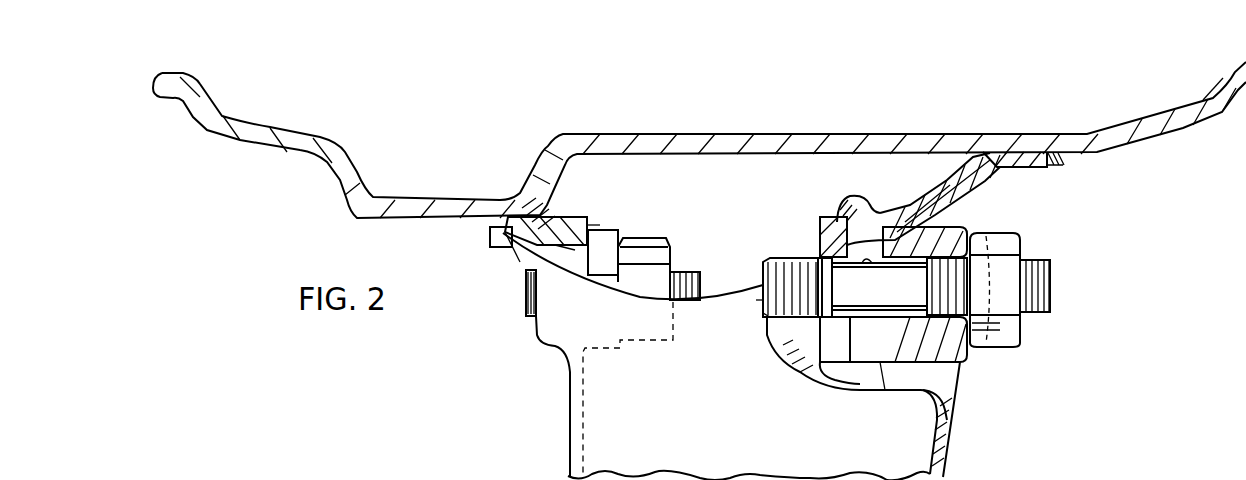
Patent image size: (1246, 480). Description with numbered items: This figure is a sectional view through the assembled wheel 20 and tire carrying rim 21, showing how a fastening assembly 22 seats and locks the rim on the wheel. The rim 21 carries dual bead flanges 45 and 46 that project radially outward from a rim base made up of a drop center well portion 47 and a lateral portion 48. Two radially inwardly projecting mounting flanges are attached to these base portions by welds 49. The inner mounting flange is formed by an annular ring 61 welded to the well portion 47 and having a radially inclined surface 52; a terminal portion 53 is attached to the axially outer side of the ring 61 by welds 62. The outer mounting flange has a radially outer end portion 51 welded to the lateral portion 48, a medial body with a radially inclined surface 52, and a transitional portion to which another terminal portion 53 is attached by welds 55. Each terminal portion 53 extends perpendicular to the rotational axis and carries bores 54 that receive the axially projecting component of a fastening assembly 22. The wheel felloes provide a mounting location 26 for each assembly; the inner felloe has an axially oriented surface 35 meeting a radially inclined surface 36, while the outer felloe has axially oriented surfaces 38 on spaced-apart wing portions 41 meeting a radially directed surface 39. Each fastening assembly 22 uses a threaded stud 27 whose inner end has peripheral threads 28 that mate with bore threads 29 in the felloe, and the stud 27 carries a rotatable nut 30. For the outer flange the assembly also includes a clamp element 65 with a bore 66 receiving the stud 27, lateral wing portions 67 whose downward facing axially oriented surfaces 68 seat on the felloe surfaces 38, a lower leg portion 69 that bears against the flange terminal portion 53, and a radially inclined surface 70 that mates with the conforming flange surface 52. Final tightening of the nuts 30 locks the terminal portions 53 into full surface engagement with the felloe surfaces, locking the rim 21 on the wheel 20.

The wheel 20 is at (543, 458).
The tire carrying rim 21 is at (690, 133).
The fastening assembly 22 is at (665, 204).
The mounting location 26 is at (518, 304).
The threaded stud 27 is at (698, 292).
The peripheral threads 28 is at (763, 296).
The bore threads 29 is at (762, 270).
The nut 30 is at (655, 243).
The axially oriented surface 35 is at (568, 256).
The radially inclined surface 36 is at (500, 258).
The axially oriented surface 38 is at (907, 293).
The radially directed surface 39 is at (823, 355).
The wing portion 41 is at (960, 373).
The bead flange 45 is at (198, 86).
The bead flange 46 is at (1228, 70).
The well portion 47 is at (420, 197).
The lateral portion 48 is at (953, 145).
The weld 49 is at (535, 205).
The radially outer end portion 51 is at (1028, 152).
The radially inclined surface 52 is at (522, 258).
The terminal portion 53 is at (610, 265).
The bore 54 is at (852, 338).
The weld 55 is at (840, 210).
The annular ring 61 is at (560, 220).
The weld 62 is at (598, 225).
The clamp element 65 is at (973, 357).
The bore 66 is at (962, 303).
The lateral wing portion 67 is at (957, 220).
The axially oriented surface 68 is at (880, 257).
The lower leg portion 69 is at (886, 362).
The radially inclined surface 70 is at (897, 220).